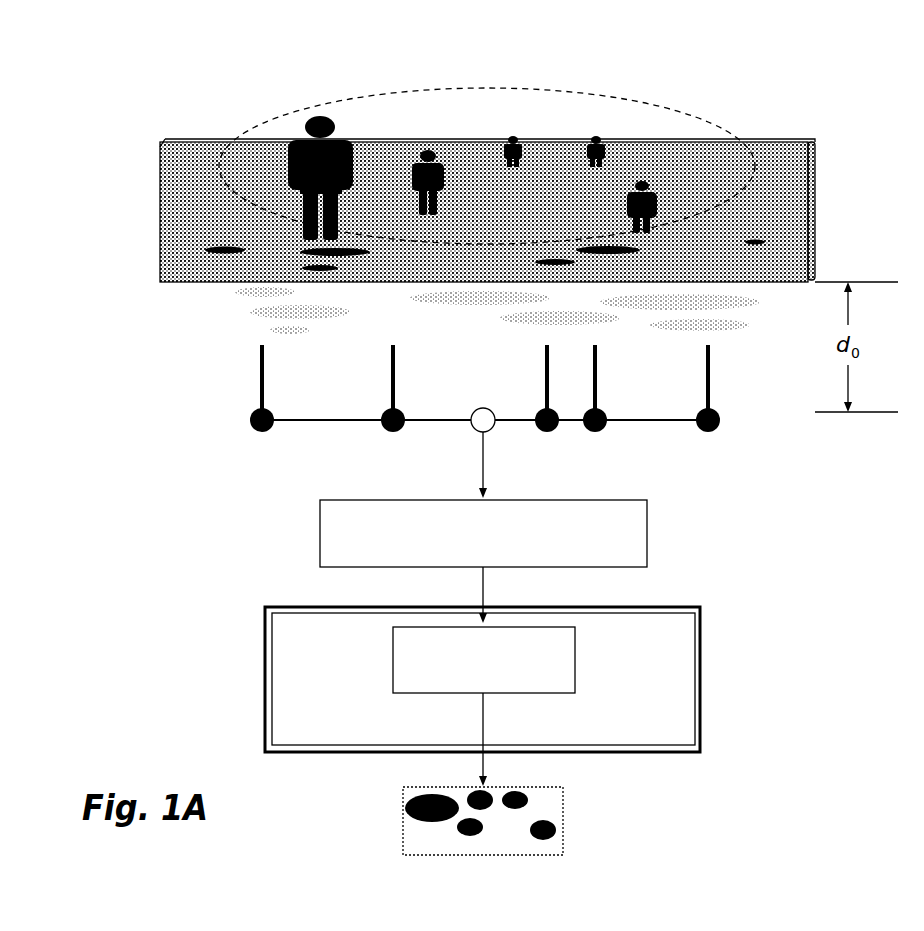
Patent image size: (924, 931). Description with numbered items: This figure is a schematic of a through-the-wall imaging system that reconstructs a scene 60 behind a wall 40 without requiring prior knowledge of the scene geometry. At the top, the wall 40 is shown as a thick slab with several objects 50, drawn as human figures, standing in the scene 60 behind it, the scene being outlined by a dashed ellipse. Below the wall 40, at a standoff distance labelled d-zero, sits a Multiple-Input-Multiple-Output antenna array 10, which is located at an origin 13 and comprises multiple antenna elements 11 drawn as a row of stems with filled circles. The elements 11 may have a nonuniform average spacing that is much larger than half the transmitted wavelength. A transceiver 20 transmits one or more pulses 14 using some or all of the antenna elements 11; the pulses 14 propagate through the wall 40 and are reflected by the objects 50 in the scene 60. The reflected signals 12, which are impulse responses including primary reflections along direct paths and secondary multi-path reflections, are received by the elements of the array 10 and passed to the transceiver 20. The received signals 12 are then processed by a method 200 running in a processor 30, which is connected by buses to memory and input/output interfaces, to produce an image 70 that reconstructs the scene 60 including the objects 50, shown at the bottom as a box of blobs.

The MIMO antenna array 10 is at (313, 430).
The antenna elements 11 is at (382, 387).
The reflected signals 12 is at (460, 305).
The origin 13 is at (493, 431).
The pulses 14 is at (670, 305).
The transceiver 20 is at (649, 545).
The processor 30 is at (701, 658).
The wall 40 is at (810, 214).
The objects 50 is at (318, 116).
The scene 60 is at (607, 94).
The image 70 is at (564, 815).
The method 200 is at (576, 669).